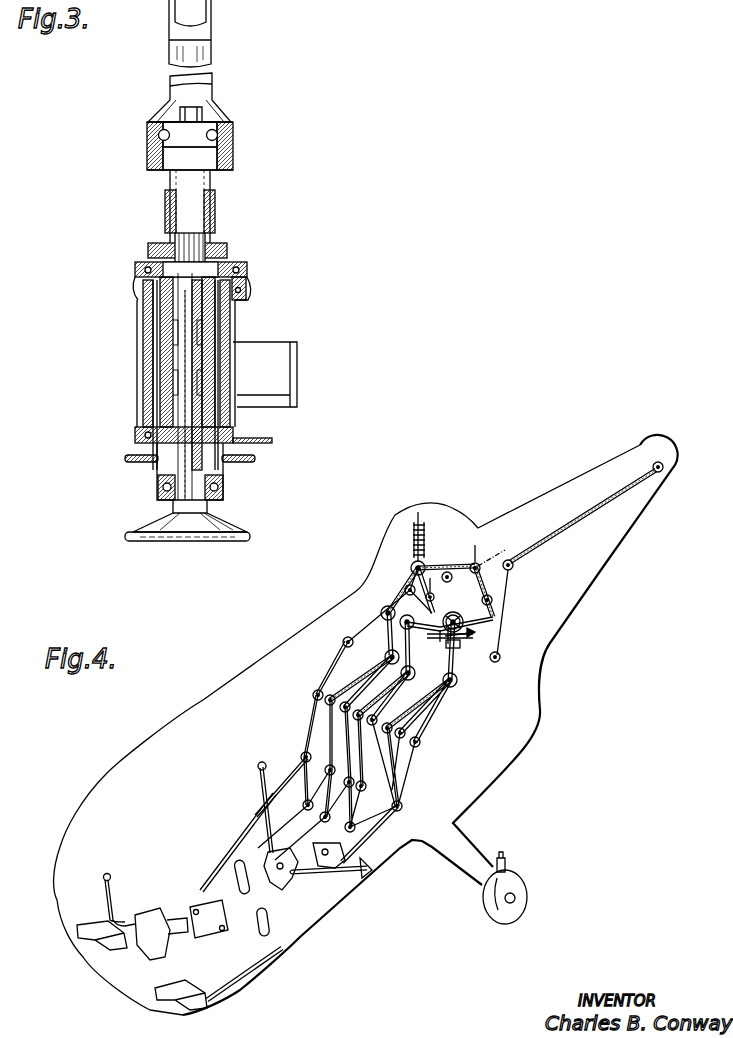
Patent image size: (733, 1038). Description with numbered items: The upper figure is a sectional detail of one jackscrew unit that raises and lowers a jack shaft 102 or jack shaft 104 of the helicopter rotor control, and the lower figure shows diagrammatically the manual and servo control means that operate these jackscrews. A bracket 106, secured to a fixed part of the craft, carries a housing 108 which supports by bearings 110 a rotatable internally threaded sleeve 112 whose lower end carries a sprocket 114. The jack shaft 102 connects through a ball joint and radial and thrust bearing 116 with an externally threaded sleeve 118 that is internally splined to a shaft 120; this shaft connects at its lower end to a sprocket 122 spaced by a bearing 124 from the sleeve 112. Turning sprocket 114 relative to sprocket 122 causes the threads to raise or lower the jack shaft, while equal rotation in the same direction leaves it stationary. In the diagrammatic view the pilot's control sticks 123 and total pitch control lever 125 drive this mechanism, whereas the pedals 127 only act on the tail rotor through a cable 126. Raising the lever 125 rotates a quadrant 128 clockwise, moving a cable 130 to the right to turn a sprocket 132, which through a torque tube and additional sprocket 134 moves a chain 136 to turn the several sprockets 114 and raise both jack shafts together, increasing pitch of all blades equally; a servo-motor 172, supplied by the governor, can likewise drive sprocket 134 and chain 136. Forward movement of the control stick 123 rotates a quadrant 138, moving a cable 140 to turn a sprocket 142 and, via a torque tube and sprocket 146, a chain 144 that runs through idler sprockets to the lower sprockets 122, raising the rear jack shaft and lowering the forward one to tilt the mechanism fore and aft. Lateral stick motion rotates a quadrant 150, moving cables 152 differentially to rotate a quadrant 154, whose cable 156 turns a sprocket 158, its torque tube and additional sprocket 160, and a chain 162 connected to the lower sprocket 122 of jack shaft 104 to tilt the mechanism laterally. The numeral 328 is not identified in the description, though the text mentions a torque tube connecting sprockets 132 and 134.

In FIG. 3, the jack shaft 102 is at (212, 50).
In FIG. 4, the jack shaft 102 is at (438, 577).
In FIG. 4, the jack shaft 104 is at (415, 562).
In FIG. 3, the bracket 106 is at (277, 352).
In FIG. 3, the housing 108 is at (233, 322).
In FIG. 3, the bearings 110 is at (135, 437).
In FIG. 3, the internally threaded sleeve 112 is at (213, 249).
In FIG. 3, the sprocket 114 is at (250, 462).
In FIG. 4, the sprocket 114 is at (436, 596).
In FIG. 3, the ball joint and radial and thrust bearing 116 is at (150, 135).
In FIG. 3, the externally threaded sleeve 118 is at (168, 205).
In FIG. 3, the shaft 120 is at (165, 402).
In FIG. 3, the sprocket 122 is at (228, 541).
In FIG. 4, the sprocket 122 is at (438, 604).
In FIG. 4, the control stick 123 is at (105, 876).
In FIG. 3, the bearing 124 is at (162, 488).
In FIG. 4, the total pitch control lever 125 is at (350, 876).
In FIG. 4, the cable 126 is at (575, 528).
In FIG. 4, the pedals 127 is at (155, 998).
In FIG. 4, the quadrant 128 is at (330, 870).
In FIG. 4, the cable 130 is at (385, 848).
In FIG. 4, the sprocket 132 is at (453, 690).
In FIG. 4, the sprocket 134 is at (462, 640).
In FIG. 4, the chain 136 is at (462, 632).
In FIG. 4, the quadrant 138 is at (305, 878).
In FIG. 4, the cable 140 is at (362, 760).
In FIG. 4, the sprocket 142 is at (420, 674).
In FIG. 4, the chain 144 is at (415, 640).
In FIG. 4, the sprocket 146 is at (385, 628).
In FIG. 4, the quadrant 150 is at (243, 858).
In FIG. 4, the cables 152 is at (267, 905).
In FIG. 4, the quadrant 154 is at (298, 760).
In FIG. 4, the cable 156 is at (330, 722).
In FIG. 4, the sprocket 158 is at (385, 657).
In FIG. 4, the sprocket 160 is at (382, 612).
In FIG. 4, the chain 162 is at (394, 600).
In FIG. 4, the servo-motor 172 is at (478, 630).
In FIG. 4, the block 328 is at (455, 652).